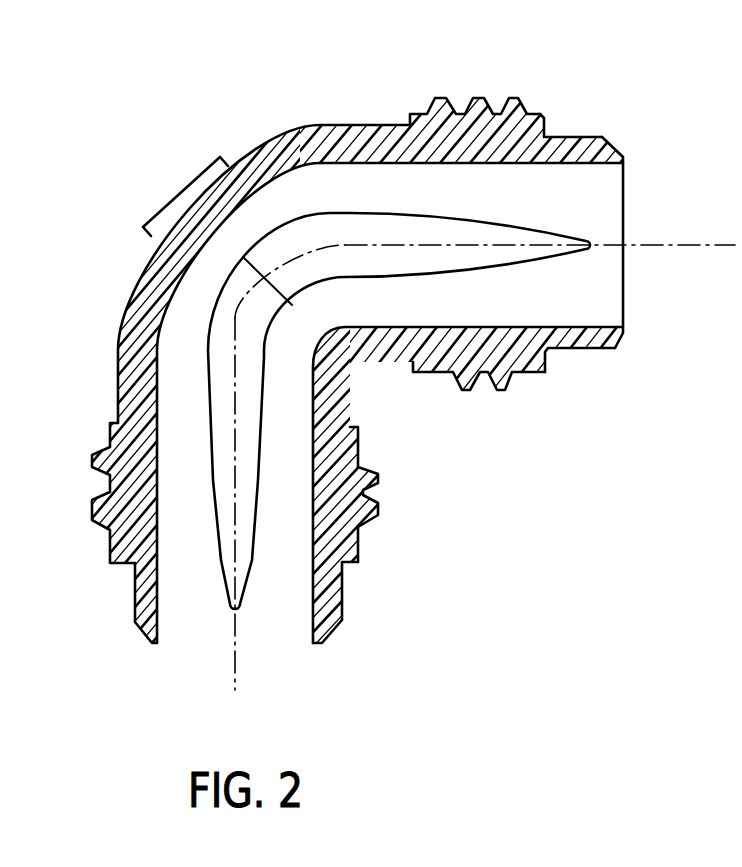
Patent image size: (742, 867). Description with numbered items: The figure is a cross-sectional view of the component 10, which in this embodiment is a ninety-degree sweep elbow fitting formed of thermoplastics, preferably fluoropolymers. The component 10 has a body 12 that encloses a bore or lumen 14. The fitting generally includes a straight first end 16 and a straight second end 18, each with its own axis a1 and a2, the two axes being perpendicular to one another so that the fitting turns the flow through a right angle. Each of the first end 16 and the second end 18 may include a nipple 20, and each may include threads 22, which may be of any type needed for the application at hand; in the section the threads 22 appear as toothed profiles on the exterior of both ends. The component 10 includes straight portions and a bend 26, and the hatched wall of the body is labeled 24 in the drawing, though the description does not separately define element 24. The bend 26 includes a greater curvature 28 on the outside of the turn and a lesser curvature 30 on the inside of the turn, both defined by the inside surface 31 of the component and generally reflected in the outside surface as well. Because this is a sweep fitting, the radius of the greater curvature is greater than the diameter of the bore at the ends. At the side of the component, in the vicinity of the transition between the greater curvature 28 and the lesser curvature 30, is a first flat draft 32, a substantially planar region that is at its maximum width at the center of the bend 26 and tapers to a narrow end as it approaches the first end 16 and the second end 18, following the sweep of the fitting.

The component 10 is at (651, 154).
The body 12 is at (247, 150).
The bore or lumen 14 is at (605, 212).
The first end 16 is at (600, 347).
The second end 18 is at (337, 626).
The nipple 20 is at (607, 138).
The threads 22 is at (493, 111).
The wall 24 is at (472, 322).
The bend 26 is at (197, 250).
The greater curvature 28 is at (243, 200).
The lesser curvature 30 is at (320, 335).
The inside surface 31 is at (537, 165).
The first flat draft 32 is at (217, 390).
The axis a1 is at (717, 246).
The axis a2 is at (237, 670).